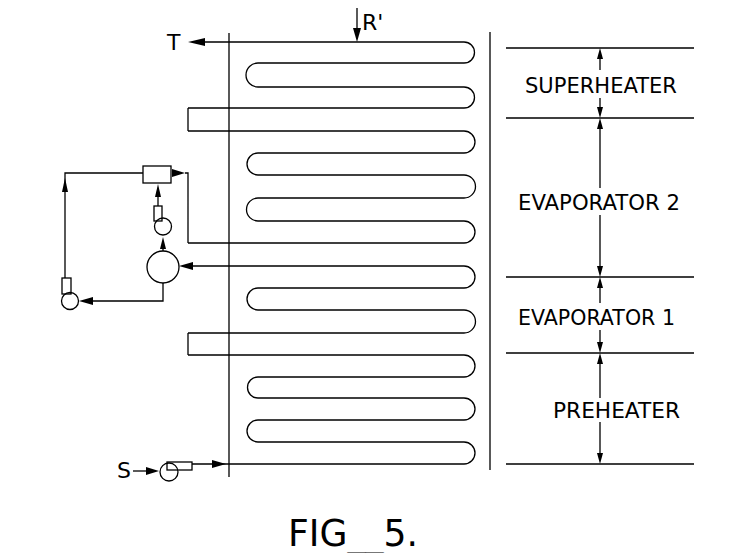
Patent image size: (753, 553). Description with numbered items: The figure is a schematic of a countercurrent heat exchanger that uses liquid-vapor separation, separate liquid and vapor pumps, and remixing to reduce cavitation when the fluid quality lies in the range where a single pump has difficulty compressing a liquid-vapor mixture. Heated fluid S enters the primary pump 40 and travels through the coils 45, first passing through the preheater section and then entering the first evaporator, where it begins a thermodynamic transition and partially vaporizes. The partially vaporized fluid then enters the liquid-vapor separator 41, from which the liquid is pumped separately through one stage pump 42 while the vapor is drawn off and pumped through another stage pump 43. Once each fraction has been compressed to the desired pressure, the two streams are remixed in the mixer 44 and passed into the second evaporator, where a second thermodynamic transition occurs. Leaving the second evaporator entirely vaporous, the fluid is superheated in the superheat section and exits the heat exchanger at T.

The primary pump 40 is at (182, 471).
The liquid-vapor separator 41 is at (174, 288).
The stage pump 42 is at (62, 302).
The stage pump 43 is at (142, 226).
The mixer 44 is at (155, 160).
The coils 45 is at (341, 472).